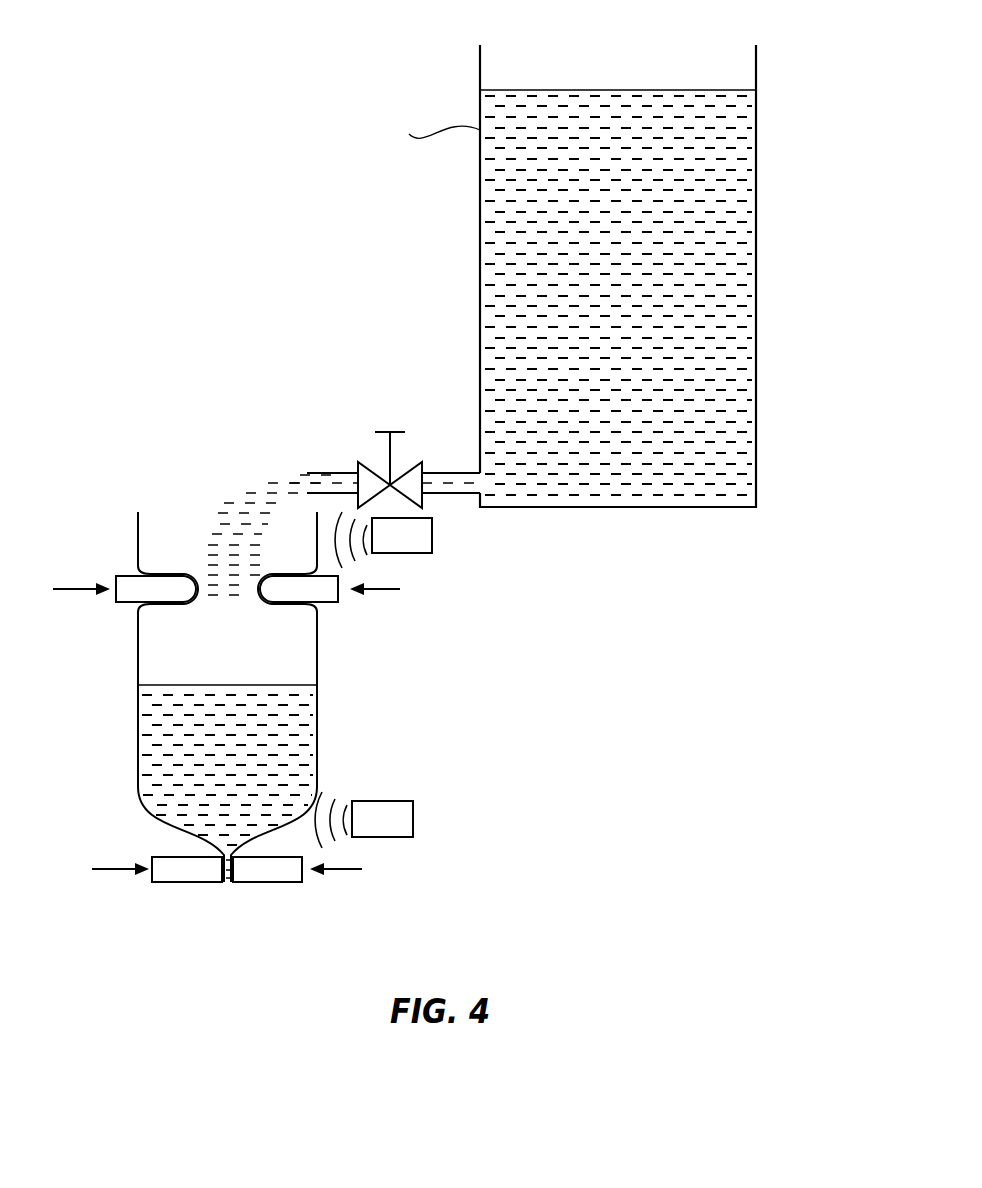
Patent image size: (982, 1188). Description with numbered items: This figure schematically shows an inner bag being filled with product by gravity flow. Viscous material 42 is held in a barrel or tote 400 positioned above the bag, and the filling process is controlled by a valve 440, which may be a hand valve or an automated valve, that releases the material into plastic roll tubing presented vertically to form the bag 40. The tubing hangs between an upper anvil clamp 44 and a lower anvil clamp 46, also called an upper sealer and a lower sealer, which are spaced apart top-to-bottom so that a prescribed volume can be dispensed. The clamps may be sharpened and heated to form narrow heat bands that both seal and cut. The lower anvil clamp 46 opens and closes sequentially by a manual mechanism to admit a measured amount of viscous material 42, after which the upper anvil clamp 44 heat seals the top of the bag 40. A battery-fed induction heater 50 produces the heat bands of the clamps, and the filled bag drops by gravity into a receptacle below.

The barrel or tote 400 is at (757, 192).
The viscous material 42 is at (742, 270).
The valve 440 is at (378, 465).
The bag 40 is at (318, 660).
The upper anvil clamp 44 is at (120, 577).
The lower anvil clamp 46 is at (155, 884).
The induction heater 50 is at (373, 680).